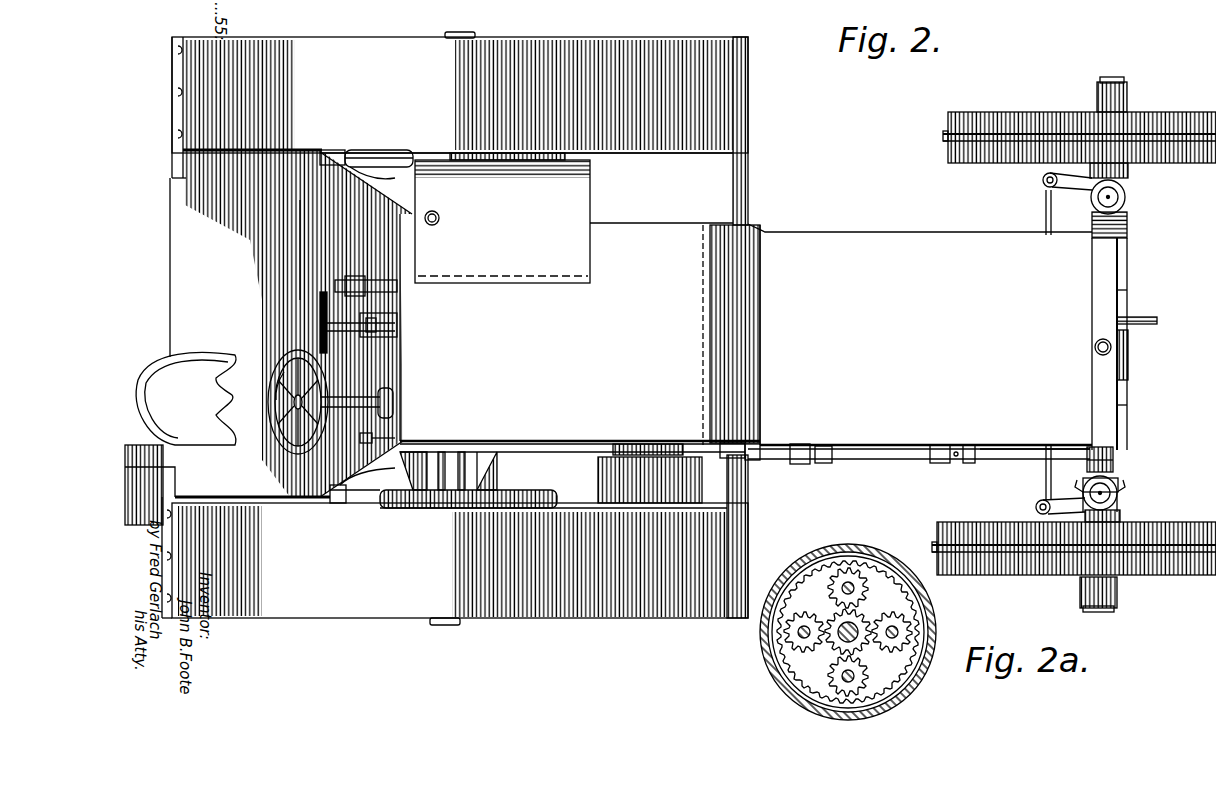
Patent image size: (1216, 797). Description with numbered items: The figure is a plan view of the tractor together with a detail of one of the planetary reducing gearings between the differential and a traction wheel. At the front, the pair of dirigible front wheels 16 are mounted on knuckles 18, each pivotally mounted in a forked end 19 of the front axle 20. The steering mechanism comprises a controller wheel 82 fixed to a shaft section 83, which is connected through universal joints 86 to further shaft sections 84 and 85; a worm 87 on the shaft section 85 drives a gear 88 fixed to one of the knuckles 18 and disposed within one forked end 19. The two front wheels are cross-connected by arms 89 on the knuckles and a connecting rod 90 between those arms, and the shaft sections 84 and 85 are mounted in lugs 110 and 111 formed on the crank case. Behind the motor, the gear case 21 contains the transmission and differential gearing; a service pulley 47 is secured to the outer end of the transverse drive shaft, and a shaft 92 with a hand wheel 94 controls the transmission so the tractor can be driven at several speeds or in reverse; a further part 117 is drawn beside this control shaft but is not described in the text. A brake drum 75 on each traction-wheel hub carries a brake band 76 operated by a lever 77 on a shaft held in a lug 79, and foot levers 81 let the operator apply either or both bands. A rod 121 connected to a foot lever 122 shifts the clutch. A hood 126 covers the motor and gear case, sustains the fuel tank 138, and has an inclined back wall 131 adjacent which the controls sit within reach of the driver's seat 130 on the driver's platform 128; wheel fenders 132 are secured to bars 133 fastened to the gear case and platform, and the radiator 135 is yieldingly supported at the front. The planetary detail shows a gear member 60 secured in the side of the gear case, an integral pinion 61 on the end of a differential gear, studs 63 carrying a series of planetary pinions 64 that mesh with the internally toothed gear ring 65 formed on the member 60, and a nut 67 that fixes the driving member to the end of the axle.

In FIG. 2, the dirigible front wheel 16 is at (1178, 118).
In FIG. 2, the knuckle 18 is at (1118, 197).
In FIG. 2, the forked end 19 is at (1122, 220).
In FIG. 2, the front axle 20 is at (1122, 293).
In FIG. 2A, the gear case 21 is at (788, 572).
In FIG. 2, the service pulley 47 is at (650, 480).
In FIG. 2A, the gear member 60 is at (818, 556).
In FIG. 2A, the integral pinion 61 is at (830, 645).
In FIG. 2A, the stud 63 is at (852, 586).
In FIG. 2A, the planetary pinion 64 is at (893, 618).
In FIG. 2A, the internally toothed gear ring 65 is at (905, 672).
In FIG. 2, the nut 67 is at (466, 33).
In FIG. 2, the brake drum 75 is at (458, 471).
In FIG. 2, the brake band 76 is at (395, 150).
In FIG. 2, the lever 77 is at (326, 150).
In FIG. 2, the lug 79 is at (368, 180).
In FIG. 2, the foot lever 81 is at (284, 372).
In FIG. 2, the controller wheel 82 is at (270, 410).
In FIG. 2, the shaft section 83 is at (350, 404).
In FIG. 2, the shaft section 84 is at (888, 461).
In FIG. 2, the shaft section 85 is at (1022, 460).
In FIG. 2, the universal joint 86 is at (796, 464).
In FIG. 2, the worm 87 is at (1115, 452).
In FIG. 2, the gear 88 is at (1128, 484).
In FIG. 2, the arm 89 is at (1076, 188).
In FIG. 2, the connecting rod 90 is at (1045, 214).
In FIG. 2, the shaft 92 is at (338, 324).
In FIG. 2, the hand wheel 94 is at (322, 306).
In FIG. 2, the lug 110 is at (828, 463).
In FIG. 2, the lug 111 is at (968, 463).
In FIG. 2, the bracket 117 is at (371, 316).
In FIG. 2, the rod 121 is at (544, 444).
In FIG. 2, the foot lever 122 is at (296, 450).
In FIG. 2, the hood 126 is at (746, 332).
In FIG. 2, the driver's platform 128 is at (291, 323).
In FIG. 2, the driver's seat 130 is at (186, 399).
In FIG. 2, the inclined back wall 131 is at (332, 250).
In FIG. 2, the wheel fender 132 is at (455, 327).
In FIG. 2, the bar 133 is at (748, 192).
In FIG. 2, the radiator 135 is at (1105, 374).
In FIG. 2, the fuel tank 138 is at (526, 218).